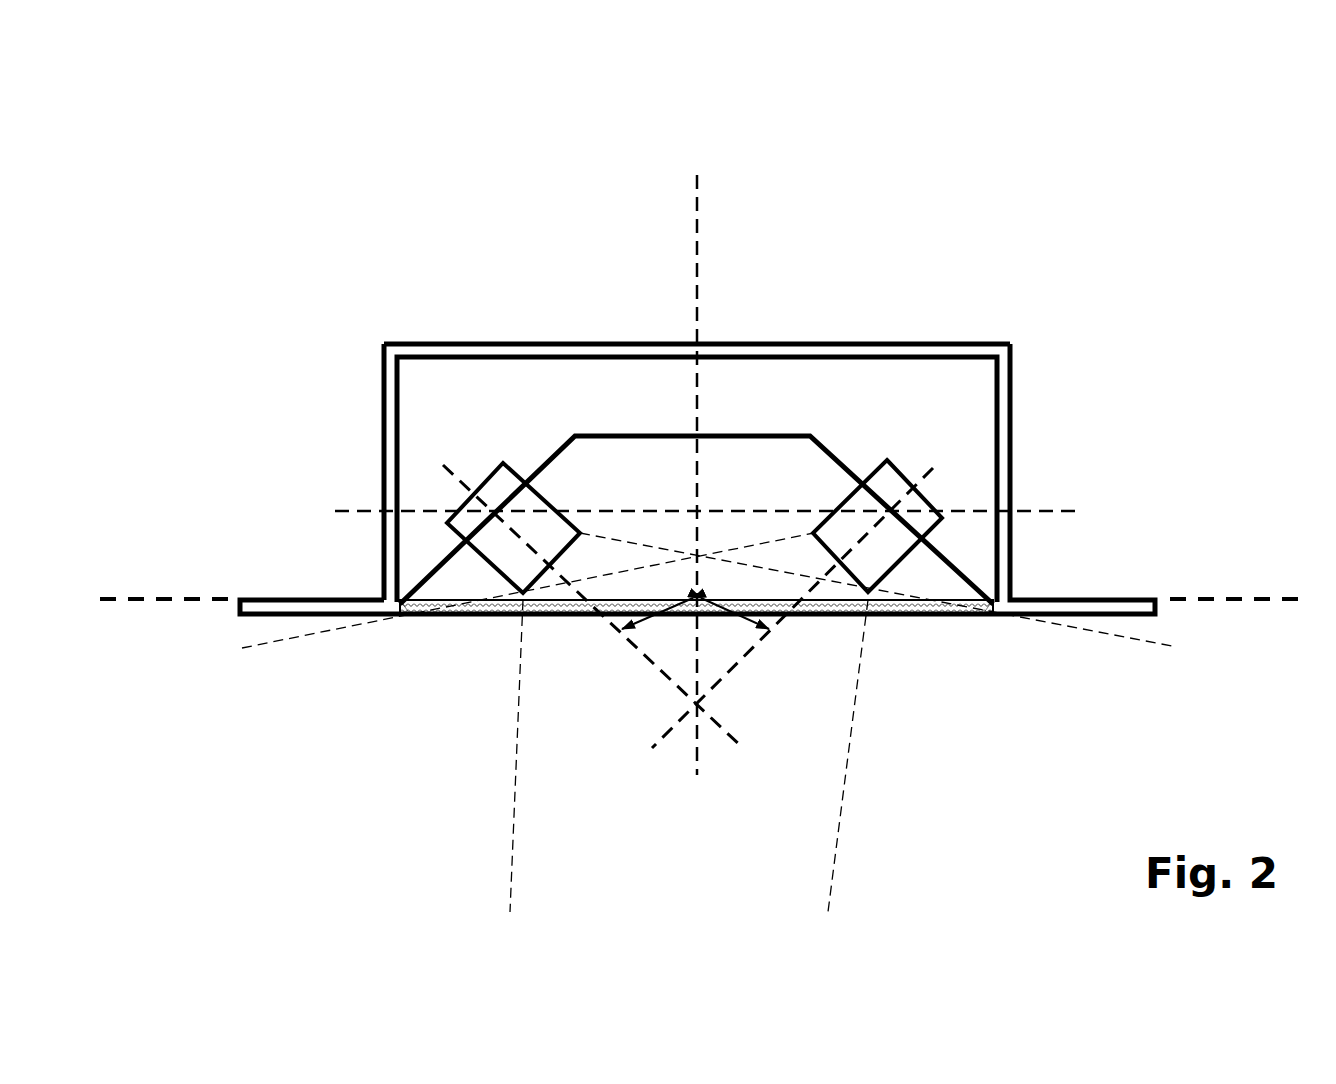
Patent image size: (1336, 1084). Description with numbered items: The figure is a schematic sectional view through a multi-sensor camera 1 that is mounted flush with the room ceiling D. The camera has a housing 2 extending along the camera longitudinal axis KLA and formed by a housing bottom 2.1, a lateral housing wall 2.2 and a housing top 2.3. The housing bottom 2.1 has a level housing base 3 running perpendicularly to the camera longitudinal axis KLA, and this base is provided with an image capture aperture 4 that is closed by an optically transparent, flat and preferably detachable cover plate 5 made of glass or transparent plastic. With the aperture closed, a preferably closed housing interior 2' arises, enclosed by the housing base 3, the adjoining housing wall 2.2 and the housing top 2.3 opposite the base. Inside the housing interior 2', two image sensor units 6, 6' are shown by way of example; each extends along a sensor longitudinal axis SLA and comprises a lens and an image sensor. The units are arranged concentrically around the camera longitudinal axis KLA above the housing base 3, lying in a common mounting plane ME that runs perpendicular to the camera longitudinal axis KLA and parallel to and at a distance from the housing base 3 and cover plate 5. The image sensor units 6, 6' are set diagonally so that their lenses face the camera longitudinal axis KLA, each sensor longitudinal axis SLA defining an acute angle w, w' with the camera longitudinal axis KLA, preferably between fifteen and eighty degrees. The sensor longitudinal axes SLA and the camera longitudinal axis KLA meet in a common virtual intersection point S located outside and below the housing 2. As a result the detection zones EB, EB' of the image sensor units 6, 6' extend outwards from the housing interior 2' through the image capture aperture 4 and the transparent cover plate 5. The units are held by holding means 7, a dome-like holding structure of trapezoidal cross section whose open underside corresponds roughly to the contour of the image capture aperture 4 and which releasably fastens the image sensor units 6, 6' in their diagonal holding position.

The multi-sensor camera 1 is at (1080, 188).
The housing 2 is at (697, 400).
The housing interior 2' is at (750, 466).
The housing bottom 2.1 is at (482, 762).
The lateral housing wall 2.2 is at (360, 463).
The housing top 2.3 is at (502, 333).
The housing base 3 is at (500, 632).
The image capture aperture 4 is at (405, 620).
The cover plate 5 is at (895, 617).
The image sensor unit 6 is at (513, 492).
The image sensor unit 6' is at (877, 497).
The holding means 7 is at (753, 433).
The camera longitudinal axis KLA is at (707, 434).
The mounting plane ME is at (743, 507).
The room ceiling D is at (188, 598).
The intersection point S is at (700, 700).
The sensor longitudinal axis SLA is at (688, 628).
The acute angle w is at (657, 628).
The acute angle w' is at (735, 628).
The detection zone EB is at (876, 632).
The detection zone EB' is at (522, 634).